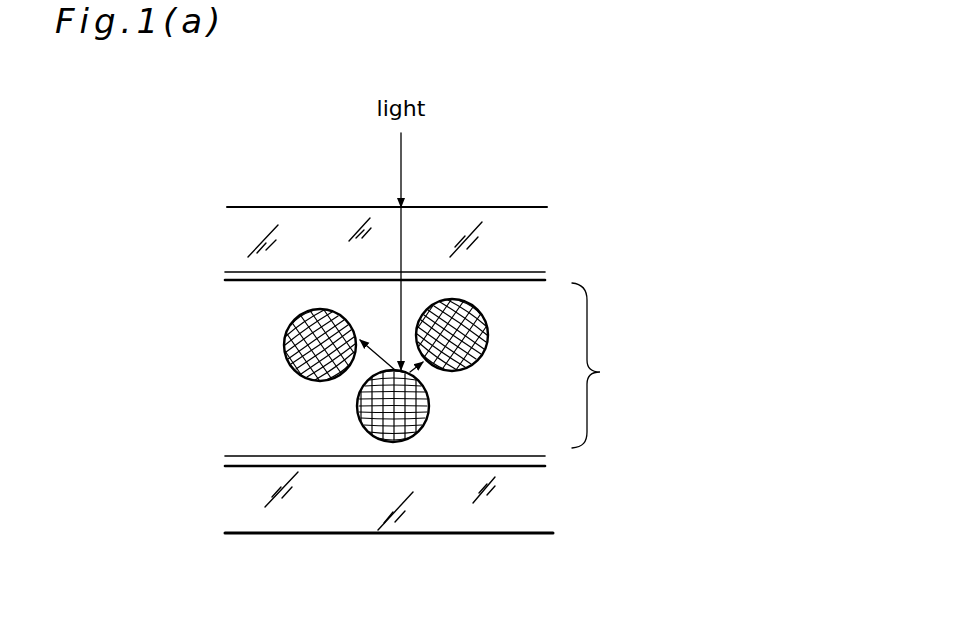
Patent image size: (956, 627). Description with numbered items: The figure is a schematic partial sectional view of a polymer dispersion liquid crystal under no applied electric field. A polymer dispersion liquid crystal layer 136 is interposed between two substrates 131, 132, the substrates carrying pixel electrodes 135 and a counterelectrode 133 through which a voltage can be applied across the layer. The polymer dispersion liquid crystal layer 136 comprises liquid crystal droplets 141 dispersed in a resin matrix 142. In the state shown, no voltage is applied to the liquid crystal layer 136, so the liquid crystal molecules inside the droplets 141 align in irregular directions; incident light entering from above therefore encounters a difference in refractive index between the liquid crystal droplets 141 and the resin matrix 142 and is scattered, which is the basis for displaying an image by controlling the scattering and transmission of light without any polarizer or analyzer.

The substrate 131 is at (243, 493).
The substrate 132 is at (297, 213).
The counterelectrode 133 is at (525, 272).
The pixel electrodes 135 is at (520, 467).
The polymer dispersion liquid crystal layer 136 is at (618, 365).
The liquid crystal droplets 141 is at (285, 340).
The resin matrix 142 is at (283, 402).